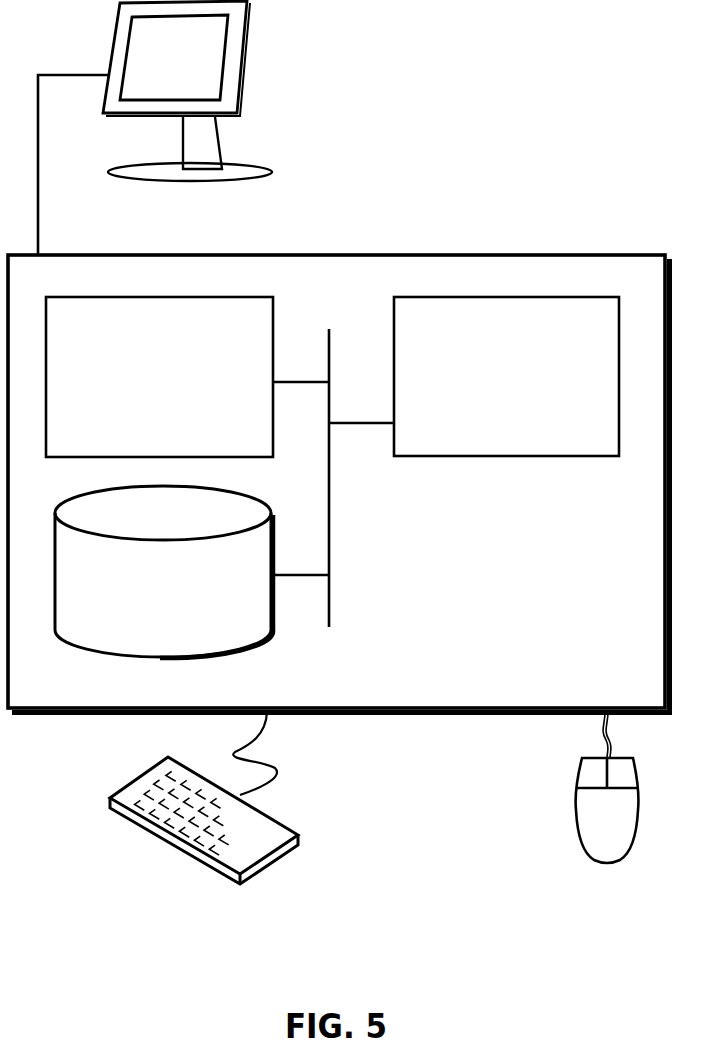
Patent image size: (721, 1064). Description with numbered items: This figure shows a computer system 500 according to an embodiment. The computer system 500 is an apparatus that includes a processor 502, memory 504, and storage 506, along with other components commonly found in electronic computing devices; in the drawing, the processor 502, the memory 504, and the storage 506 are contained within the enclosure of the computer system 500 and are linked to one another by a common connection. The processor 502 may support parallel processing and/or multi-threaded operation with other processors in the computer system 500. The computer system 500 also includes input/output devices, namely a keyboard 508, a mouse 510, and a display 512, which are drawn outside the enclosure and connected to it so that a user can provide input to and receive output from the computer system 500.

The computer system 500 is at (383, 233).
The processor 502 is at (488, 389).
The memory 504 is at (139, 387).
The storage 506 is at (188, 600).
The keyboard 508 is at (131, 820).
The mouse 510 is at (585, 830).
The display 512 is at (155, 128).